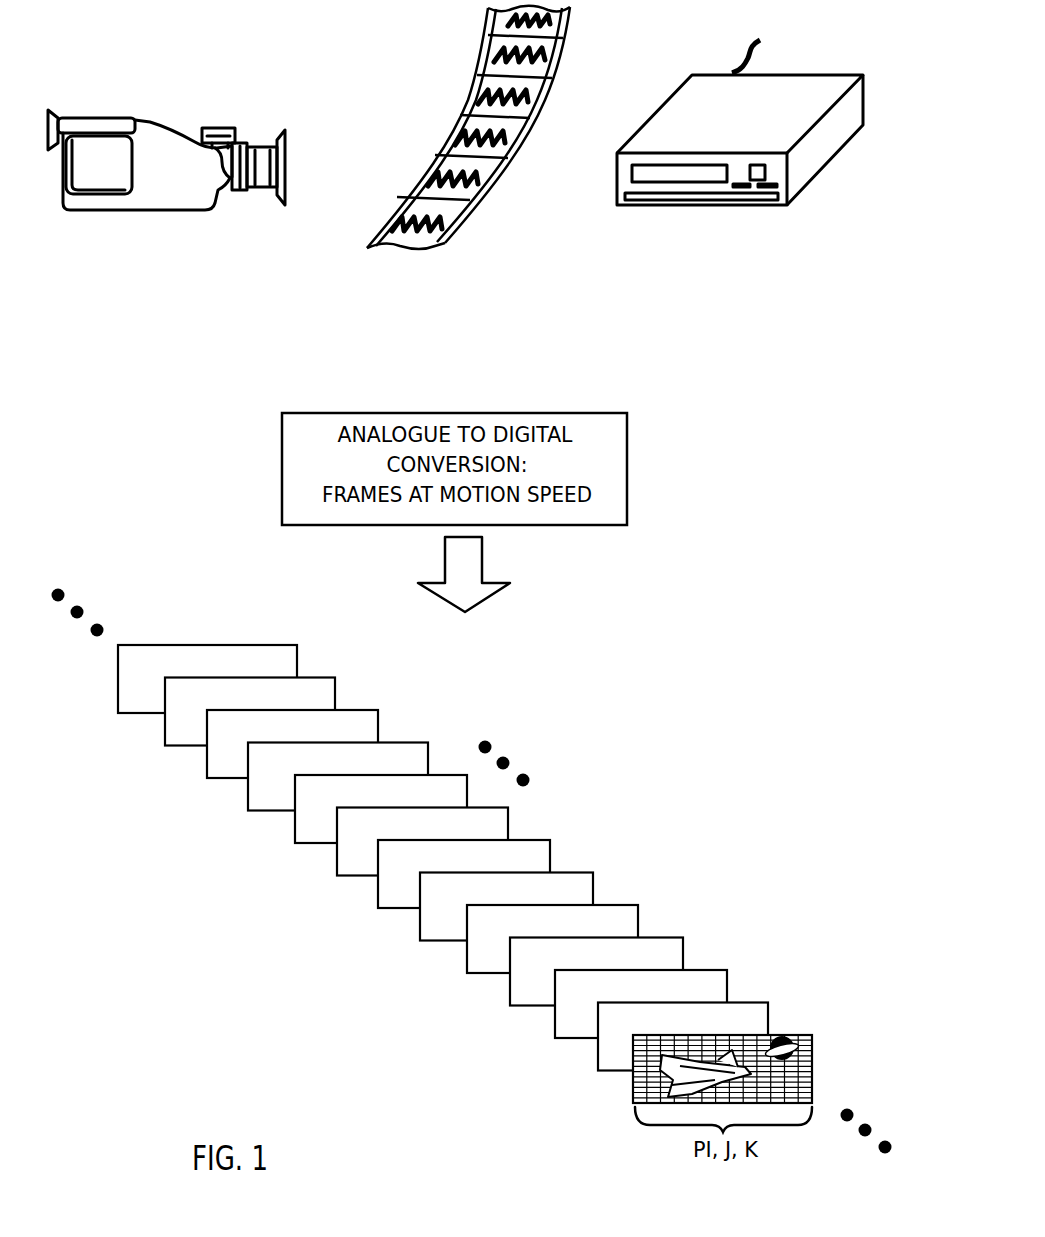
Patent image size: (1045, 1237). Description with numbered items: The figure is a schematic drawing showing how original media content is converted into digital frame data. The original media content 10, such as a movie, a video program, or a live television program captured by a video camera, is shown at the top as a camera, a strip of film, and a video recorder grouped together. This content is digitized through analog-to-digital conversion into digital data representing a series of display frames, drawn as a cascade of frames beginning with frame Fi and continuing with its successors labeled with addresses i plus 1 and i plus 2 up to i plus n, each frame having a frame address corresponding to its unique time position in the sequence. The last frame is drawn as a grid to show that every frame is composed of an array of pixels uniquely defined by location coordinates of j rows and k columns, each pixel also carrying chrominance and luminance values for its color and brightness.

The original media content 10 is at (145, 318).
The display frame Fi is at (287, 650).
The digitised frame i+ 1 is at (322, 682).
The digitised frame i+ 2 is at (362, 719).
The digitised frame i+n with pixels PI,J,K n is at (797, 1037).